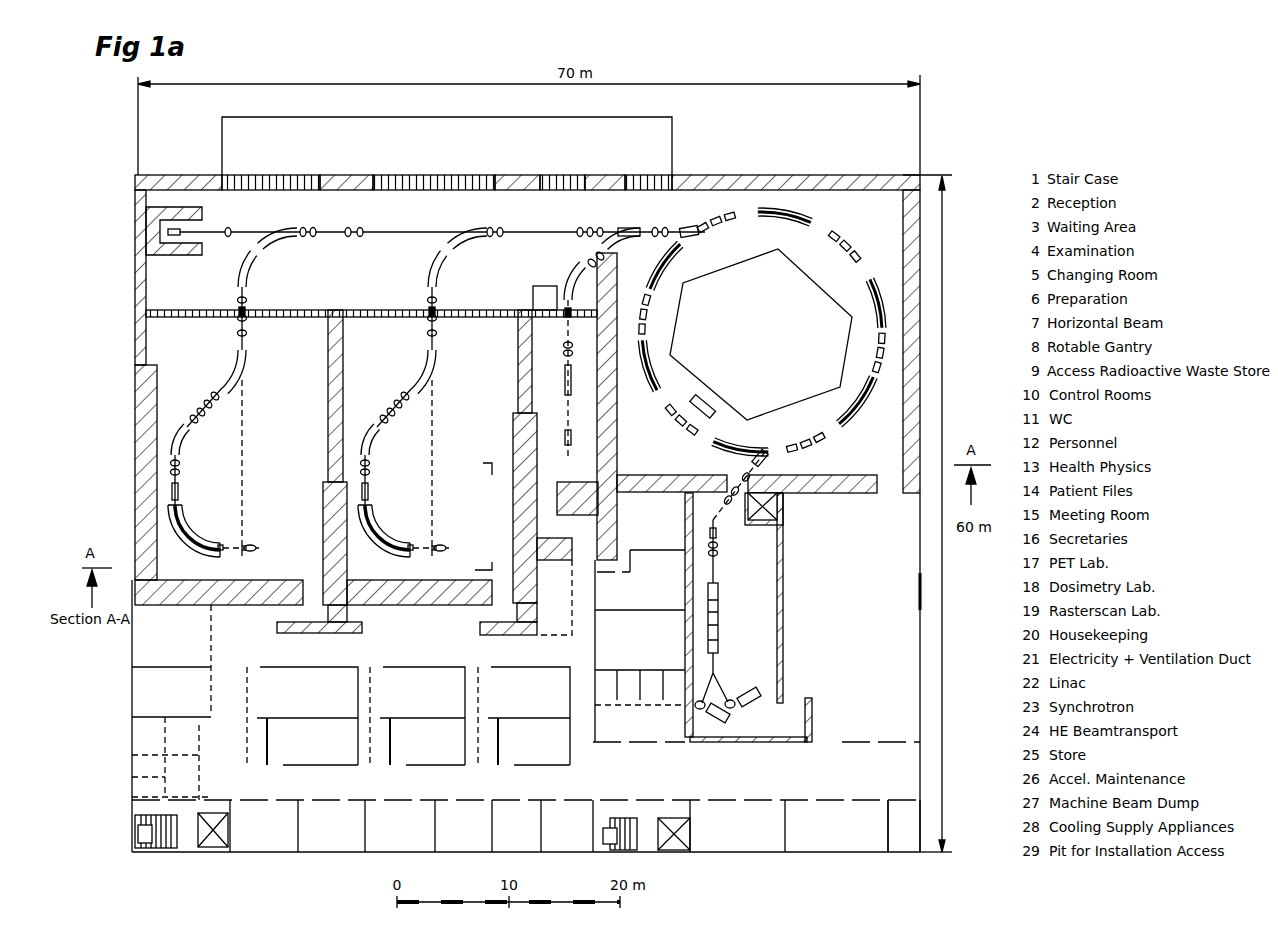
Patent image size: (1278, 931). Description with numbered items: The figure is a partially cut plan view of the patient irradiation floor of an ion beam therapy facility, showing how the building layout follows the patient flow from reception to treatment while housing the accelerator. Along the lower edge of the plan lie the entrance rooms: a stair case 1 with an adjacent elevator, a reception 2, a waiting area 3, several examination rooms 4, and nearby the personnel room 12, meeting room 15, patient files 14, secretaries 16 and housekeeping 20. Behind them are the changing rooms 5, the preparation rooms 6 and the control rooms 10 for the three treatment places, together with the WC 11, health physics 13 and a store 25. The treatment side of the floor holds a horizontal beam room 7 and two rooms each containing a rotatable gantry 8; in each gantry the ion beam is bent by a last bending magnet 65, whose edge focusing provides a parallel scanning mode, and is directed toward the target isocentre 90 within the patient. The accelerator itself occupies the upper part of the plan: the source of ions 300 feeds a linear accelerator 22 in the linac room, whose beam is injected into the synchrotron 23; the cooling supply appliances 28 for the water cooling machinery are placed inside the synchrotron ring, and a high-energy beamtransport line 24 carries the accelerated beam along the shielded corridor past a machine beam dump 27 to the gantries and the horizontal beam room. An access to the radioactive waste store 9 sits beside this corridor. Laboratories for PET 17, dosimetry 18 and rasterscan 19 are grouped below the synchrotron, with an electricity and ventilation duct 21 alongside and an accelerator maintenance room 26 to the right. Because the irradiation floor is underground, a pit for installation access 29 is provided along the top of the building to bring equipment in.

The Stair Case 1 is at (412, 831).
The Reception 2 is at (579, 826).
The Waiting Area 3 is at (721, 759).
The Examination 4 is at (332, 826).
The Changing Room 5 is at (372, 716).
The Preparation 6 is at (415, 716).
The Horizontal Beam 7 is at (602, 344).
The gantry 8 is at (327, 405).
The Access Radioactive Waste Store 9 is at (545, 298).
The Control Rooms 10 is at (413, 741).
The WC 11 is at (404, 758).
The Personnel 12 is at (859, 826).
The Health Physics 13 is at (171, 698).
The Patient Files 14 is at (524, 826).
The Meeting Room 15 is at (737, 826).
The Secretaries 16 is at (474, 826).
The PET Lab. 17 is at (640, 631).
The Dosimetry Lab. 18 is at (640, 592).
The Rasterscan Lab. 19 is at (640, 667).
The Housekeeping 20 is at (904, 826).
The Electricity + Ventilation Duct 21 is at (554, 586).
The linear accelerator 22 is at (748, 595).
The synchrotron accelerator 23 is at (657, 397).
The HE Beamtransport 24 is at (442, 223).
The Store 25 is at (171, 660).
The Accel. Maintenance 26 is at (881, 657).
The Machine Beam Dump 27 is at (174, 242).
The Cooling Supply Appliances 28 is at (761, 334).
The Pit for Installation Access 29 is at (447, 146).
The last bending magnet 65 is at (194, 523).
The target isocentre 90 is at (246, 556).
The source of ions 300 is at (734, 719).